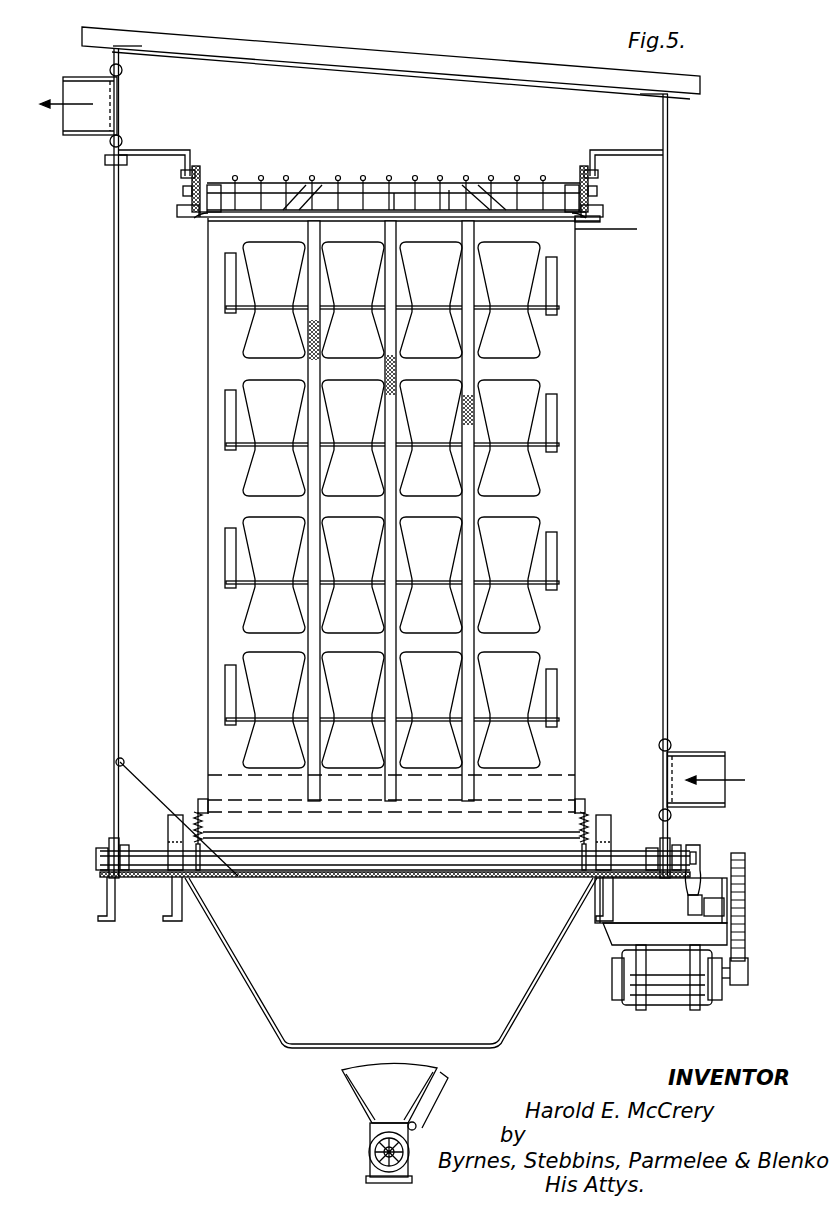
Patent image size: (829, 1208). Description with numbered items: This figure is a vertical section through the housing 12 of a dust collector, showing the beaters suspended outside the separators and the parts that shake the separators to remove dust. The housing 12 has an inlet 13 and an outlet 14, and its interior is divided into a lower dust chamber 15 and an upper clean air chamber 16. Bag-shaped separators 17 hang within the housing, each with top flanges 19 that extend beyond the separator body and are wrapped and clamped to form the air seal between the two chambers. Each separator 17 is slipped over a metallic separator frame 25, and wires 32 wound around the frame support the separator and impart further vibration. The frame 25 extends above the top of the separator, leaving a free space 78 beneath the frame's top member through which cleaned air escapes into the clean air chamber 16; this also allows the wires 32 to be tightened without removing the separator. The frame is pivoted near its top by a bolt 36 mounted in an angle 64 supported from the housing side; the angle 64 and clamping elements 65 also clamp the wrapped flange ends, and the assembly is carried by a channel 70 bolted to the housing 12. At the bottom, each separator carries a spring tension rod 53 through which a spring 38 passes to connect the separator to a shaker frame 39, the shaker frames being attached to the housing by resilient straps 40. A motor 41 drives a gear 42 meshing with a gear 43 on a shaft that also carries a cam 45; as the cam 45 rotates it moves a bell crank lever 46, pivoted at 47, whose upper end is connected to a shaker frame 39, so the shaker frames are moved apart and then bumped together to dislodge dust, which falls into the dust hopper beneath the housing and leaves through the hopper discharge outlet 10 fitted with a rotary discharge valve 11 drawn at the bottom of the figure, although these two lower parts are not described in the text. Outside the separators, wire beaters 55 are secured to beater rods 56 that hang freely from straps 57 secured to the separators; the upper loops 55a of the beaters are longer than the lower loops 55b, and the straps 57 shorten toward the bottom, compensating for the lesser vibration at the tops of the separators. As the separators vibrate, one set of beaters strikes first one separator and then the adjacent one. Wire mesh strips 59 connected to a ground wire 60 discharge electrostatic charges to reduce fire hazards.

The discharge outlet 10 is at (372, 1083).
The rotary valve 11 is at (370, 1133).
The housing 12 is at (706, 523).
The inlet 13 is at (716, 743).
The outlet 14 is at (86, 118).
The dust chamber 15 is at (128, 560).
The clean air chamber 16 is at (448, 96).
The separator 17 is at (222, 494).
The flange 19 is at (280, 239).
The separator frame 25 is at (296, 195).
The wire 32 is at (449, 200).
The bolt 36 is at (183, 190).
The spring 38 is at (203, 826).
The shaker frame 39 is at (190, 812).
The resilient strap 40 is at (168, 842).
The motor 41 is at (676, 995).
The gear 42 is at (784, 981).
The gear 43 is at (780, 883).
The cam 45 is at (688, 905).
The bell crank lever 46 is at (728, 883).
The pivot 47 is at (408, 870).
The spring tension rod 53 is at (346, 808).
The beater 55 is at (390, 335).
The upper loop 55a is at (526, 383).
The lower loop 55b is at (524, 515).
The beater rod 56 is at (447, 438).
The strap 57 is at (230, 280).
The wire mesh strip 59 is at (462, 371).
The ground wire 60 is at (618, 229).
The angle 64 is at (200, 185).
The clamping element 65 is at (177, 211).
The channel 70 is at (166, 150).
The free space 78 is at (396, 200).